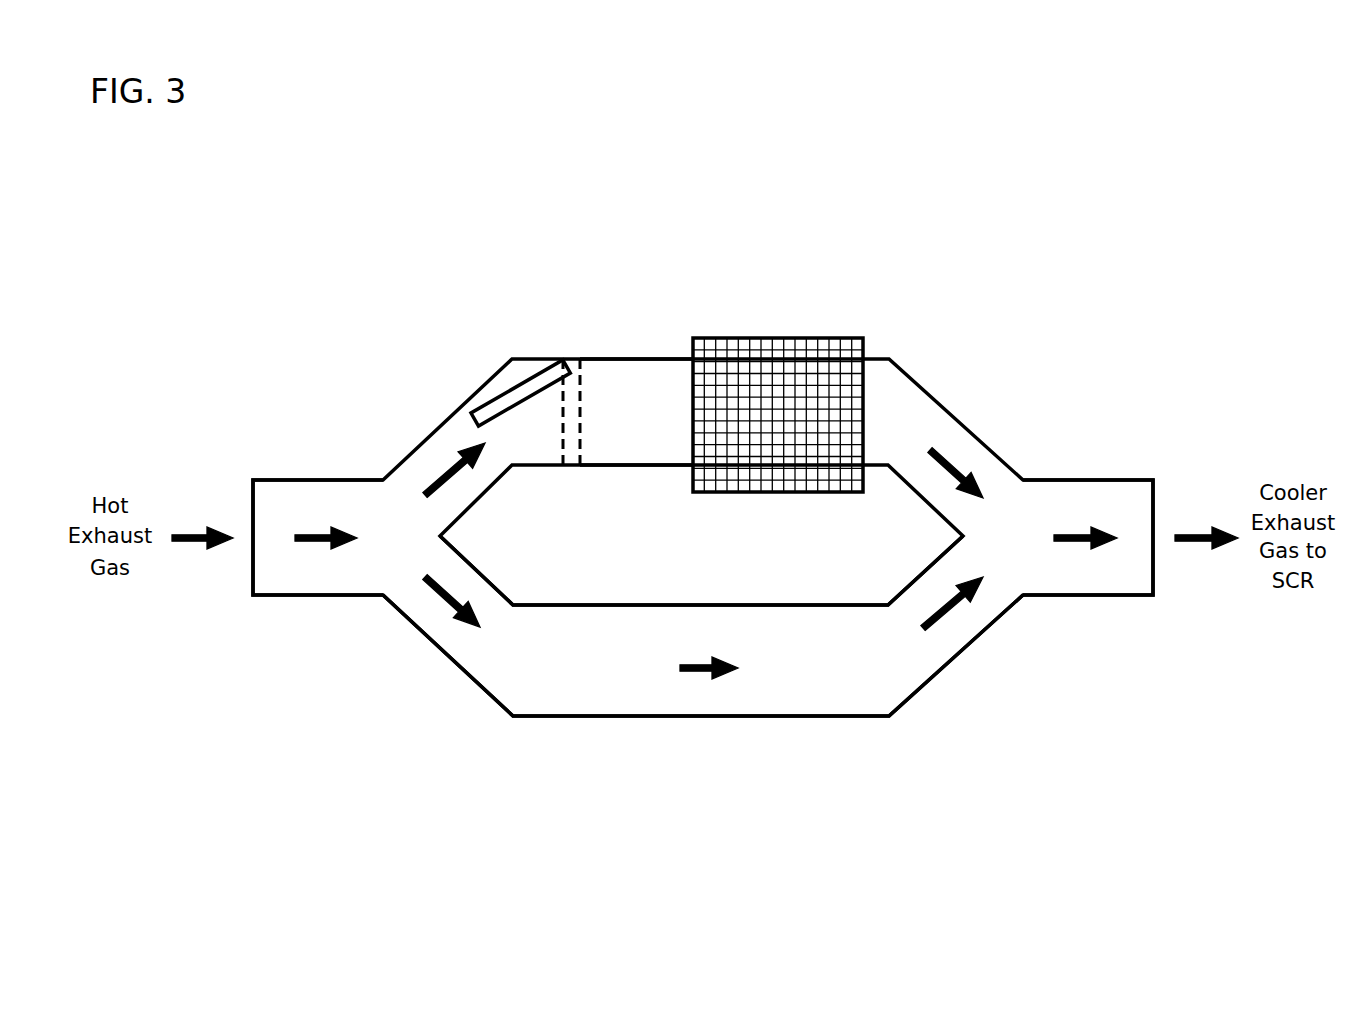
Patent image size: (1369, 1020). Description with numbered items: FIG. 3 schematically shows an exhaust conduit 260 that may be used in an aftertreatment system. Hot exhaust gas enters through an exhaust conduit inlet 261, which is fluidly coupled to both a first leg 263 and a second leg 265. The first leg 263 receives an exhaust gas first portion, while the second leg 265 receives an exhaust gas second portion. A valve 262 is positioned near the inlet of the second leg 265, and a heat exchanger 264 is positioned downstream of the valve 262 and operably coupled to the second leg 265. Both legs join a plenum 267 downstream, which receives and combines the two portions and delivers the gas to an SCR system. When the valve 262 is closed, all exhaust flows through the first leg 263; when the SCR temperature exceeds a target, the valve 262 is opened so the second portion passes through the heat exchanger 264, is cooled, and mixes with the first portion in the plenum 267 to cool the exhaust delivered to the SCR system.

The exhaust conduit 260 is at (960, 348).
The exhaust conduit inlet 261 is at (322, 582).
The valve 262 is at (522, 392).
The first leg 263 is at (772, 714).
The heat exchanger 264 is at (786, 355).
The second leg 265 is at (645, 370).
The plenum 267 is at (1110, 587).